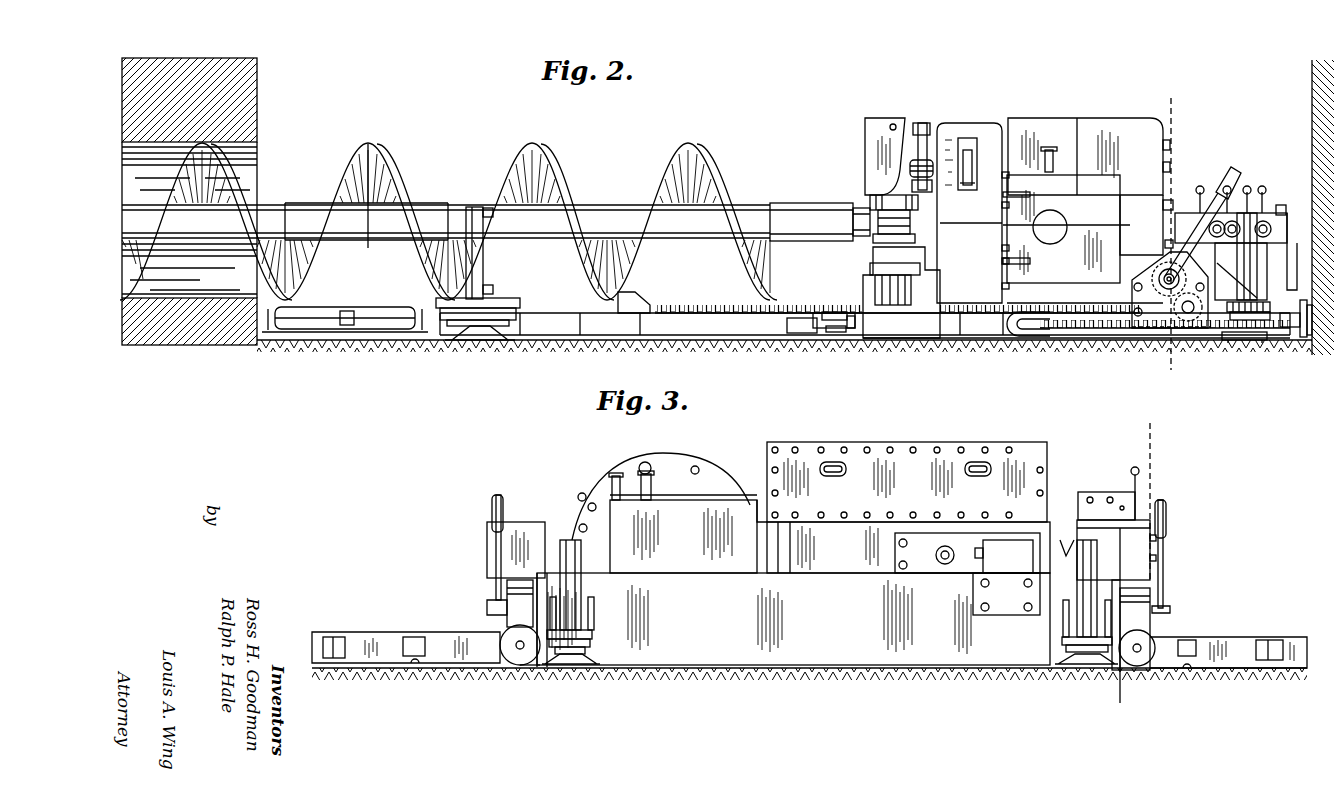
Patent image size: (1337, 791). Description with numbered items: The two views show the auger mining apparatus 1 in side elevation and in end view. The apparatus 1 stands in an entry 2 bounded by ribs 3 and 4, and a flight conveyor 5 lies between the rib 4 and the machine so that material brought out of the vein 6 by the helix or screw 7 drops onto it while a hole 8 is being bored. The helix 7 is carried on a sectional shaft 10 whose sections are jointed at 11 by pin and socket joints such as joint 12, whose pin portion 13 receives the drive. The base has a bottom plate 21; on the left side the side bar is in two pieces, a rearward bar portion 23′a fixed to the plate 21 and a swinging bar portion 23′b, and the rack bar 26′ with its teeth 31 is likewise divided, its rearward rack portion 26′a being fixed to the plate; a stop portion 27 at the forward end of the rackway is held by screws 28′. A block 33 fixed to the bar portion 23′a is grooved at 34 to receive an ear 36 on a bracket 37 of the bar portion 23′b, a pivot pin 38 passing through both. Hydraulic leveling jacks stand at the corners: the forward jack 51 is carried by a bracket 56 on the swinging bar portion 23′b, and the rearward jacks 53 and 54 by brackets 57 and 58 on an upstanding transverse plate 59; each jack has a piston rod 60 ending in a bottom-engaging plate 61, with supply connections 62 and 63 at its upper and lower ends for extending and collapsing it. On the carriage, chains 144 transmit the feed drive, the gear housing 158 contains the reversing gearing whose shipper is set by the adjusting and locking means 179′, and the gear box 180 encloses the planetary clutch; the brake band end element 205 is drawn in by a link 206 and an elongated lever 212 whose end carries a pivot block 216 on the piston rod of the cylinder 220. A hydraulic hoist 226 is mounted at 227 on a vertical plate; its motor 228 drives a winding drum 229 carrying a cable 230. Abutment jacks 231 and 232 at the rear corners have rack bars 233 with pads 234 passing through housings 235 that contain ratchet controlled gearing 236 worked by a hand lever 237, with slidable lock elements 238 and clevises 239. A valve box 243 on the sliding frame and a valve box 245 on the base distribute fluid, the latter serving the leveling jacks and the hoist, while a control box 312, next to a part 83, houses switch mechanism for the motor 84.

In FIG. 2, the apparatus 1 is at (930, 342).
In FIG. 3, the apparatus 1 is at (754, 662).
In FIG. 2, the entry 2 is at (1296, 337).
In FIG. 2, the wall or rib 3 is at (1312, 73).
In FIG. 2, the wall or rib 4 is at (259, 97).
In FIG. 2, the conveyor 5 is at (372, 322).
In FIG. 3, the conveyor 5 is at (368, 630).
In FIG. 2, the vein 6 is at (228, 74).
In FIG. 2, the helix or screw 7 is at (550, 165).
In FIG. 2, the hole or bore 8 is at (248, 152).
In FIG. 2, the sectional shaft 10 is at (592, 205).
In FIG. 2, the joint 11 is at (370, 248).
In FIG. 3, the joint 11 is at (1129, 702).
In FIG. 2, the pin and socket joint 12 is at (822, 241).
In FIG. 2, the pin portion 13 is at (1182, 372).
In FIG. 2, the bottom plate or base plate 21 is at (714, 338).
In FIG. 2, the rearward bar portion 23′a is at (985, 322).
In FIG. 2, the swinging bar portion 23′b is at (612, 324).
In FIG. 2, the rack bar 26′ is at (700, 312).
In FIG. 2, the rearward rack portion 26′a is at (977, 313).
In FIG. 2, the stop portion 27 is at (645, 300).
In FIG. 2, the rail joint 28′ is at (550, 322).
In FIG. 2, the teeth 31 is at (690, 310).
In FIG. 2, the block 33 is at (836, 320).
In FIG. 2, the groove 34 is at (825, 330).
In FIG. 2, the ear 36 is at (805, 333).
In FIG. 2, the bracket 37 is at (792, 330).
In FIG. 2, the pivot pin 38 is at (845, 330).
In FIG. 2, the hydraulic leveling jack 51 is at (487, 262).
In FIG. 3, the hydraulic leveling jack 53 is at (1082, 590).
In FIG. 2, the hydraulic leveling jack 54 is at (1258, 265).
In FIG. 3, the hydraulic leveling jack 54 is at (584, 592).
In FIG. 2, the bracket 56 is at (510, 300).
In FIG. 3, the bracket 57 is at (1063, 617).
In FIG. 2, the bracket 58 is at (1255, 293).
In FIG. 3, the bracket 58 is at (596, 618).
In FIG. 3, the upstanding transverse plate 59 is at (830, 650).
In FIG. 2, the piston rods 60 is at (470, 330).
In FIG. 3, the piston rods 60 is at (568, 658).
In FIG. 2, the bottom-engaging plates 61 is at (478, 338).
In FIG. 3, the bottom-engaging plates 61 is at (582, 662).
In FIG. 2, the supply connection 62 is at (490, 208).
In FIG. 2, the supply connection 63 is at (496, 287).
In FIG. 3, the control box 83 is at (1137, 548).
In FIG. 3, the motor 84 is at (840, 560).
In FIG. 3, the chains 144 is at (1066, 556).
In FIG. 2, the gear housing 158 is at (1098, 268).
In FIG. 3, the gear housing 158 is at (701, 563).
In FIG. 2, the adjusting and locking means 179′ is at (1055, 156).
In FIG. 3, the adjusting and locking means 179′ is at (612, 487).
In FIG. 2, the gear box 180 is at (988, 165).
In FIG. 3, the gear box 180 is at (730, 487).
In FIG. 2, the end element 205 is at (968, 150).
In FIG. 2, the link 206 is at (992, 162).
In FIG. 2, the elongated lever 212 is at (928, 140).
In FIG. 2, the pivot block 216 is at (920, 123).
In FIG. 2, the cylinder 220 is at (922, 192).
In FIG. 2, the hydraulically operated hoist 226 is at (878, 200).
In FIG. 2, the mounting 227 is at (898, 195).
In FIG. 2, the hydraulic driving motor 228 is at (890, 305).
In FIG. 2, the winding drum 229 is at (912, 238).
In FIG. 2, the cable 230 is at (855, 220).
In FIG. 2, the abutment jack 231 is at (1268, 340).
In FIG. 3, the abutment jack 231 is at (506, 640).
In FIG. 3, the abutment jack 232 is at (1150, 656).
In FIG. 2, the rack bars 233 is at (1100, 329).
In FIG. 2, the abutment elements or pads 234 is at (1306, 337).
In FIG. 3, the abutment elements or pads 234 is at (517, 658).
In FIG. 2, the housings 235 is at (1168, 320).
In FIG. 3, the housings 235 is at (520, 610).
In FIG. 2, the ratchet controlled gearing 236 is at (1221, 360).
In FIG. 2, the hand lever 237 is at (1238, 168).
In FIG. 3, the hand lever 237 is at (492, 505).
In FIG. 2, the lock elements 238 is at (1150, 300).
In FIG. 2, the clevises 239 is at (1032, 337).
In FIG. 3, the valve box 243 is at (1097, 492).
In FIG. 2, the valve box 245 is at (1268, 212).
In FIG. 3, the valve box 245 is at (985, 567).
In FIG. 2, the control box 312 is at (1140, 120).
In FIG. 3, the control box 312 is at (962, 446).